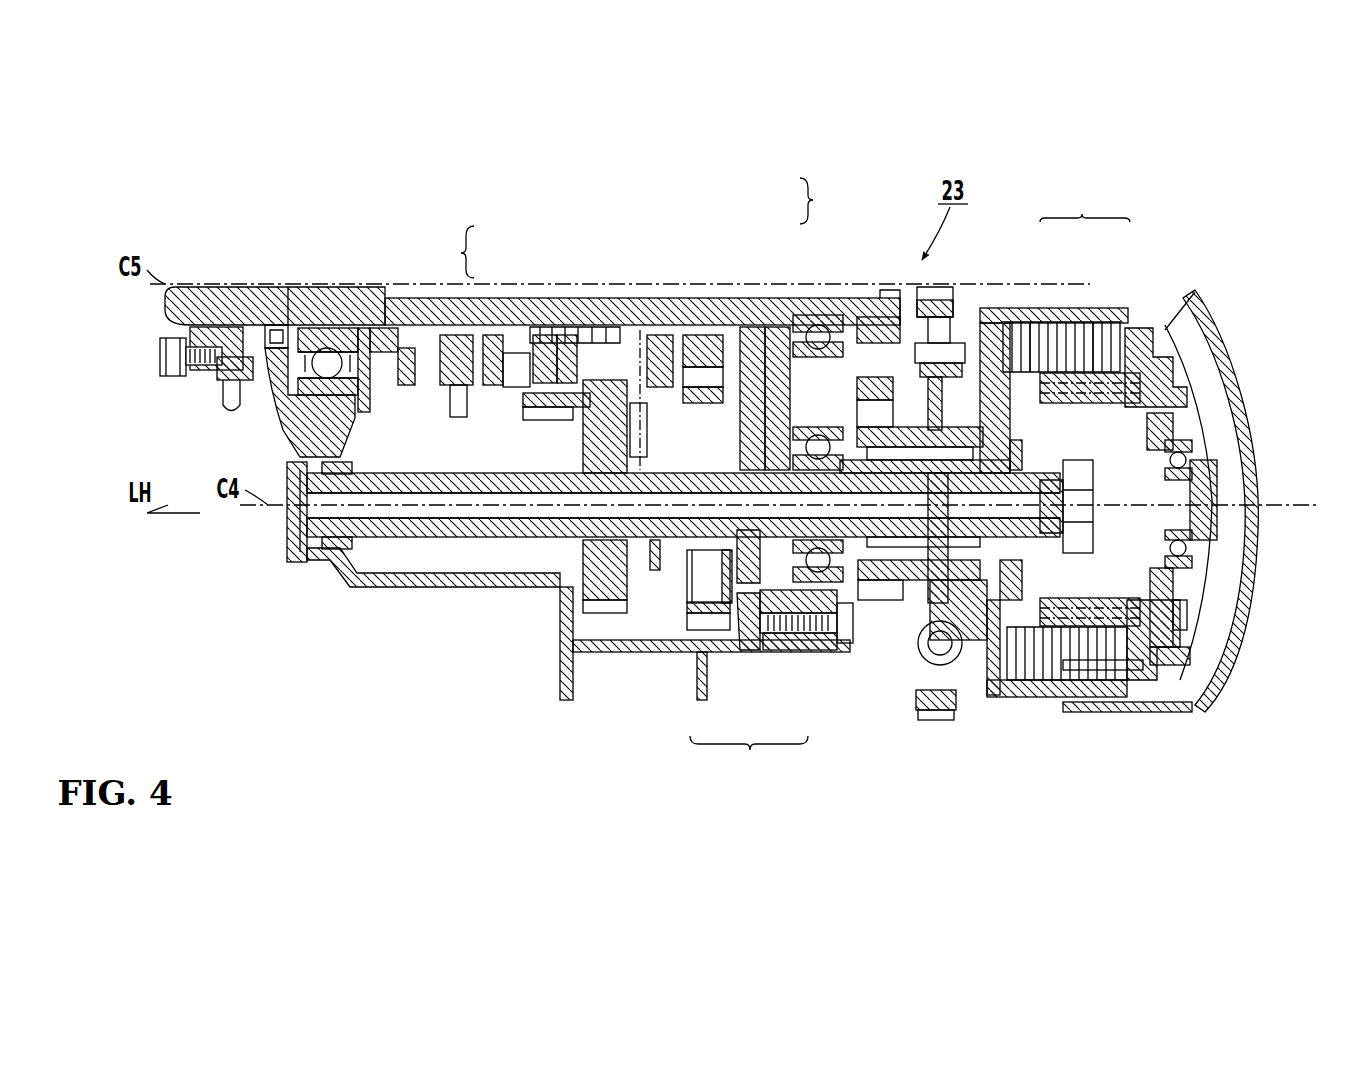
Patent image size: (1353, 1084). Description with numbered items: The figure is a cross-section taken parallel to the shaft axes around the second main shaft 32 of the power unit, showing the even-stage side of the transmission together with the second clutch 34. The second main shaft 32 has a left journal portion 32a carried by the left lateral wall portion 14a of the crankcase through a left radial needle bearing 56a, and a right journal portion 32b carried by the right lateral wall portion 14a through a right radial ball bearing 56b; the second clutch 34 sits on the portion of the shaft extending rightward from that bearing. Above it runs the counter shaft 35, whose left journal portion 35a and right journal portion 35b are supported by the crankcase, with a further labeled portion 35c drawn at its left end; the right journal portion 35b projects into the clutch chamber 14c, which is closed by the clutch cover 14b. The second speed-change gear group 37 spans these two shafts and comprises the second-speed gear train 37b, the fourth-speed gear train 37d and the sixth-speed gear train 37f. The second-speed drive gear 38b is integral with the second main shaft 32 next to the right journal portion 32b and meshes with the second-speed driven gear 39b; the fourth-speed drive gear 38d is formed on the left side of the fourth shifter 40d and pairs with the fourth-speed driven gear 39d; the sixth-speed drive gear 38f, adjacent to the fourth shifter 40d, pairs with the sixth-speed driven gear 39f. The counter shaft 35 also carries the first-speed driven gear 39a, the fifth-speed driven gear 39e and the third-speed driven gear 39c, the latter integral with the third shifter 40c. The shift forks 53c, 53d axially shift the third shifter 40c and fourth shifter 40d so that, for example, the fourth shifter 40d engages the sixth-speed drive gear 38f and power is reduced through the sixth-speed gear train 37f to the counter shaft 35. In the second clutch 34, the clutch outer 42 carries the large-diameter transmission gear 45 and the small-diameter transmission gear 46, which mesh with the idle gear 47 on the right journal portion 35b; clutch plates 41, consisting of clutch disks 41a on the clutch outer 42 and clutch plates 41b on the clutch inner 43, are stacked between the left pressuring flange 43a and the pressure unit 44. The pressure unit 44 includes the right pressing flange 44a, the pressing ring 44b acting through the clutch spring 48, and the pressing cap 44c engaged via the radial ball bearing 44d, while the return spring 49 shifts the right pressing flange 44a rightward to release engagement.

The lateral wall portion 14a is at (305, 420).
The clutch cover 14b is at (1228, 332).
The clutch chamber 14c is at (1192, 378).
The second main shaft 32 is at (418, 540).
The left journal portion 32a is at (300, 530).
The right journal portion 32b is at (850, 648).
The second clutch 34 is at (1170, 338).
The counter shaft 35 is at (403, 292).
The left journal portion 35a is at (330, 298).
The right journal portion 35b is at (805, 315).
The counter shaft bolt 35c is at (206, 378).
The second speed-change gear group 37 is at (640, 658).
The second-speed gear train 37b is at (729, 668).
The fourth-speed gear train 37d is at (451, 252).
The sixth-speed gear train 37f is at (824, 201).
The second-speed drive gear 38b is at (745, 600).
The fourth-speed drive gear 38d is at (548, 330).
The sixth-speed drive gear 38f is at (752, 330).
The first-speed driven gear 39a is at (438, 400).
The second-speed driven gear 39b is at (712, 630).
The third-speed driven gear 39c is at (540, 415).
The fourth-speed driven gear 39d is at (572, 330).
The fifth-speed driven gear 39e is at (455, 398).
The sixth-speed driven gear 39f is at (737, 330).
The third shifter 40c is at (590, 430).
The fourth shifter 40d is at (716, 330).
The clutch plates 41 is at (1066, 434).
The clutch disks 41a is at (1088, 320).
The clutch plates 41b is at (1040, 320).
The clutch outer 42 is at (1090, 708).
The clutch inner 43 is at (1150, 660).
The left pressuring flange 43a is at (1010, 680).
The pressure unit 44 is at (1190, 652).
The right pressing flange 44a is at (1150, 684).
The pressing ring 44b is at (1180, 612).
The pressing cap 44c is at (1218, 522).
The radial ball bearing 44d is at (1195, 562).
The large-diameter transmission gear 45 is at (940, 722).
The small-diameter transmission gear 46 is at (882, 600).
The idle gear 47 is at (930, 330).
The clutch spring 48 is at (1112, 564).
The return spring 49 is at (1105, 405).
The shift fork 53c is at (633, 330).
The shift fork 53d is at (677, 335).
The left radial needle bearing 56a is at (332, 550).
The right radial ball bearing 56b is at (820, 645).